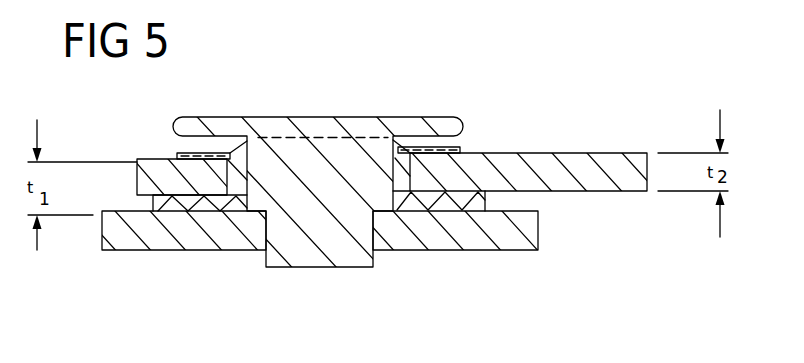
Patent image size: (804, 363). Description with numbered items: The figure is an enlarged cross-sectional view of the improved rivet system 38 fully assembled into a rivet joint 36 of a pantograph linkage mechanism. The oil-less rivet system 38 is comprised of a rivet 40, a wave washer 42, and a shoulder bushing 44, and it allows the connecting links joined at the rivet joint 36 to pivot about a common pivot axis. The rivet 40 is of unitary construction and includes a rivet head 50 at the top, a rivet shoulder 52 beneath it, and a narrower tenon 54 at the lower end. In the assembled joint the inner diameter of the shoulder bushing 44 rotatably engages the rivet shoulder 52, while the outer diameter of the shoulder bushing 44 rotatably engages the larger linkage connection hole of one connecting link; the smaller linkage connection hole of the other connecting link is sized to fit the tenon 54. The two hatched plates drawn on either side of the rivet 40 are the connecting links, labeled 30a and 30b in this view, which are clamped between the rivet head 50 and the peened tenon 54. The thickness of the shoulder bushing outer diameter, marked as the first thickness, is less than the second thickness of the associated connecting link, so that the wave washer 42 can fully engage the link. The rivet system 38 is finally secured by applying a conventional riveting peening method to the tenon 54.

The first panel 30a is at (609, 153).
The second panel 30b is at (443, 250).
The rivet joint 36 is at (568, 276).
The rivet system 38 is at (269, 287).
The rivet 40 is at (435, 106).
The wave washer 42 is at (457, 149).
The shoulder bushing 44 is at (505, 199).
The rivet head 50 is at (217, 118).
The rivet shoulder 52 is at (203, 247).
The tenon 54 is at (352, 258).